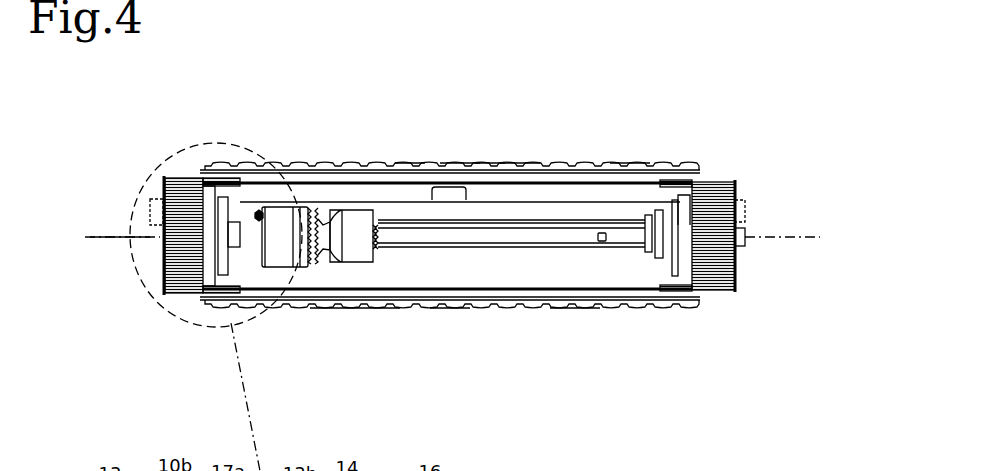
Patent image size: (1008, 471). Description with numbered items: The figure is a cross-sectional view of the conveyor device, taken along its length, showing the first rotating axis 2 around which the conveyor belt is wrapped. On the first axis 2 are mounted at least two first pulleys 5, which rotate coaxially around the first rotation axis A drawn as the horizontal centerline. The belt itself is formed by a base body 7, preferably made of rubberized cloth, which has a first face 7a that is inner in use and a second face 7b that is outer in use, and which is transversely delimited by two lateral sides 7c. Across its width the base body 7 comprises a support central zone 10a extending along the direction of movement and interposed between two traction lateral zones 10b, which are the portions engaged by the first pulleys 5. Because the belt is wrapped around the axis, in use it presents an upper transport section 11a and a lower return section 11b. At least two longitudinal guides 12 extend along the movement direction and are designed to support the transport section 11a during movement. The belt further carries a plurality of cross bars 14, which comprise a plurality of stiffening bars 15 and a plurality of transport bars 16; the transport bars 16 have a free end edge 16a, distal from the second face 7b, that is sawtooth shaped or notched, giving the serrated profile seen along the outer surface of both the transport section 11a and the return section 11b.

The first rotating axis 2 is at (138, 284).
The first pulleys 5 is at (185, 289).
The base body 7 is at (176, 178).
The first face 7a is at (572, 297).
The second face 7b is at (330, 165).
The lateral sides 7c is at (736, 181).
The support central zone 10a is at (464, 160).
The traction lateral zones 10b is at (192, 178).
The upper transport section 11a is at (626, 155).
The lower return section 11b is at (573, 320).
The longitudinal guides 12 is at (236, 185).
The cross bars 14 is at (520, 160).
The stiffening bars 15 is at (450, 312).
The transport bars 16 is at (490, 162).
The free end edge 16a is at (410, 163).
The first rotation axis A is at (95, 237).